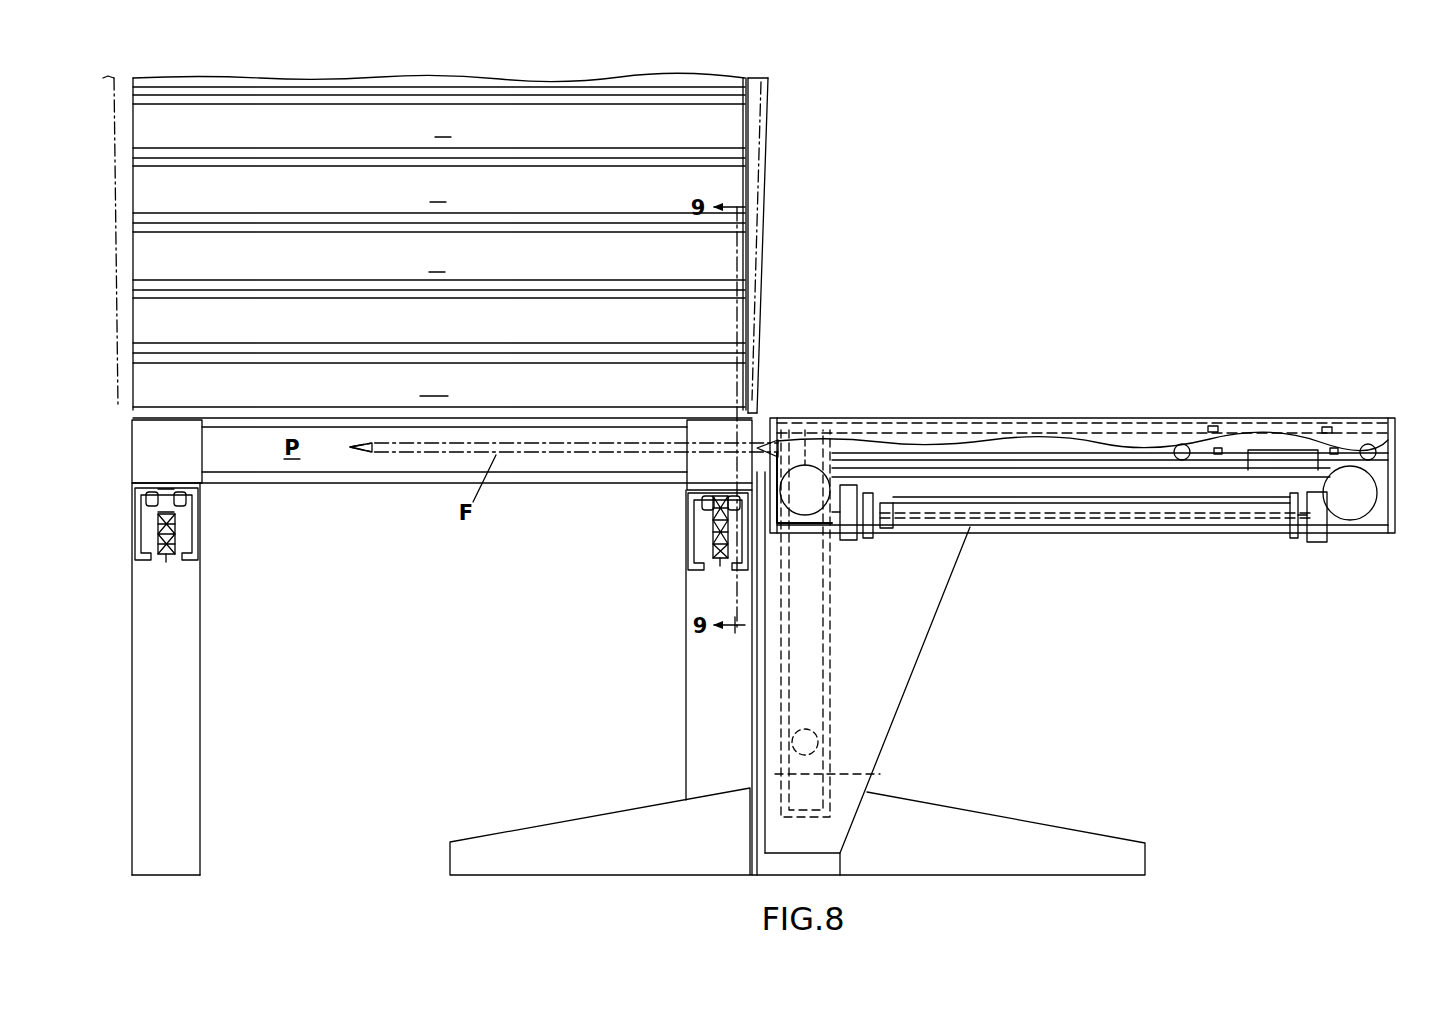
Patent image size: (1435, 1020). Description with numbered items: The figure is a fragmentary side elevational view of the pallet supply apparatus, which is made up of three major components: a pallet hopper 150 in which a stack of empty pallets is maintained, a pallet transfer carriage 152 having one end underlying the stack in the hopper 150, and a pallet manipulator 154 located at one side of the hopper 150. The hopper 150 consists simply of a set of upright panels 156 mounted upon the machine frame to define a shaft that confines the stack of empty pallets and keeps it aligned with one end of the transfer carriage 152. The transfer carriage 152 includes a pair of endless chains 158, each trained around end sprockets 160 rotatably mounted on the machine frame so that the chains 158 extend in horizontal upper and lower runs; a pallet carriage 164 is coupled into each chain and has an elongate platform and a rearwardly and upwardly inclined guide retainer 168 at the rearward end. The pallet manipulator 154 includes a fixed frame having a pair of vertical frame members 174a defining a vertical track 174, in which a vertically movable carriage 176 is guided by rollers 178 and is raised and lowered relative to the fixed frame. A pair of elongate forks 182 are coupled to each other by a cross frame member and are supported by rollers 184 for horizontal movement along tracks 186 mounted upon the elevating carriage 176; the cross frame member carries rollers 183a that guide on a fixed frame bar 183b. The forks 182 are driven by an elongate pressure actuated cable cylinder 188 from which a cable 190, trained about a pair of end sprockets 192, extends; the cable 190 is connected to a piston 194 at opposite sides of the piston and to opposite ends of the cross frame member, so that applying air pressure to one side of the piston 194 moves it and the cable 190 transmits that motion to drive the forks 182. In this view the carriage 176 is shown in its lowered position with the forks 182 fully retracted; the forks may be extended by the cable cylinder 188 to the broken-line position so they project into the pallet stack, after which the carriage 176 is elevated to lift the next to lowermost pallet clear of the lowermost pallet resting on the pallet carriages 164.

The pallet hopper 150 is at (772, 262).
The pallet transfer carriage 152 is at (187, 520).
The pallet manipulator 154 is at (985, 590).
The upright panels 156 is at (762, 298).
The endless chains 158 is at (158, 540).
The end sprockets 160 is at (166, 562).
The pallet carriage 164 is at (163, 501).
The guide retainer 168 is at (158, 455).
The vertical track 174 is at (830, 690).
The vertical frame members 174a is at (856, 773).
The vertically movable carriage 176 is at (1200, 527).
The rollers 178 is at (804, 478).
The elongate forks 182 is at (1026, 450).
The rollers 183a is at (1325, 430).
The fixed frame bar 183b is at (1140, 432).
The rollers 184 is at (1368, 445).
The tracks 186 is at (1080, 472).
The pressure actuated cable cylinder 188 is at (1075, 505).
The cable 190 is at (992, 495).
The end sprockets 192 is at (815, 478).
The piston 194 is at (893, 515).